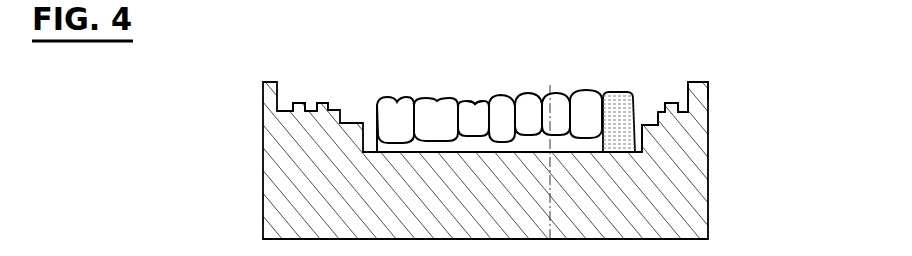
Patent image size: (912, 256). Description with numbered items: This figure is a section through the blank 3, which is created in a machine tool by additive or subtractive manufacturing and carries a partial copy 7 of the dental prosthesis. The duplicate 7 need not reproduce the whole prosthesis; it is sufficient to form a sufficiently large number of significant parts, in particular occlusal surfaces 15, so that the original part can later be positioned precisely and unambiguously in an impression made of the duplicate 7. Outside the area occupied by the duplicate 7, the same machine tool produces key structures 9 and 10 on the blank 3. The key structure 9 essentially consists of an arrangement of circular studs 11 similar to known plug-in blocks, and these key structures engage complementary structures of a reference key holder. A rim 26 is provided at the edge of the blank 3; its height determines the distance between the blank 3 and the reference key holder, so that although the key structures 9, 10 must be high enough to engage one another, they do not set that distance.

The blank 3 is at (760, 143).
The partial copy of dental prosthesis 7 is at (438, 123).
The key structure 9 is at (313, 117).
The key structure 10 is at (665, 110).
The circular studs 11 is at (328, 107).
The occlusal surfaces 15 is at (475, 96).
The rim 26 is at (700, 85).